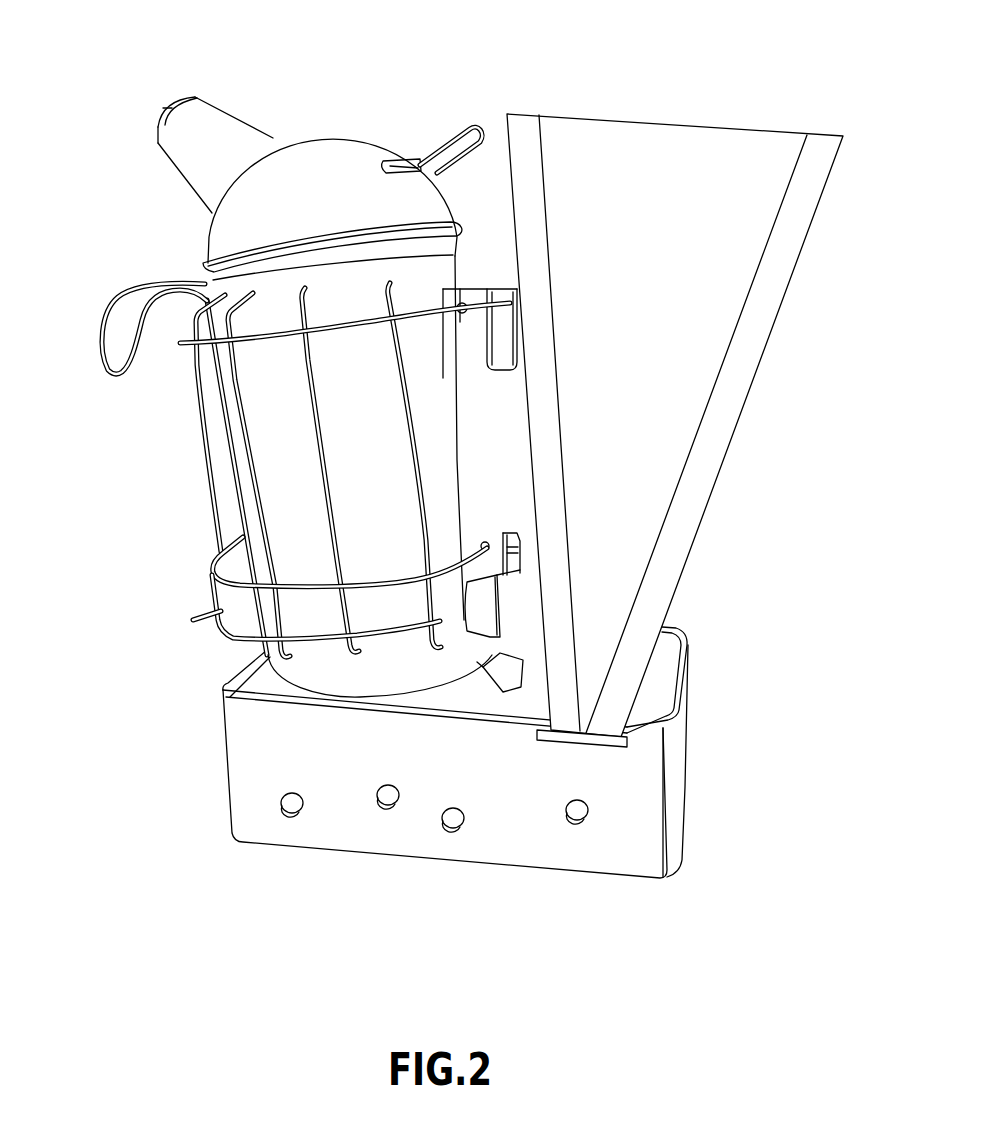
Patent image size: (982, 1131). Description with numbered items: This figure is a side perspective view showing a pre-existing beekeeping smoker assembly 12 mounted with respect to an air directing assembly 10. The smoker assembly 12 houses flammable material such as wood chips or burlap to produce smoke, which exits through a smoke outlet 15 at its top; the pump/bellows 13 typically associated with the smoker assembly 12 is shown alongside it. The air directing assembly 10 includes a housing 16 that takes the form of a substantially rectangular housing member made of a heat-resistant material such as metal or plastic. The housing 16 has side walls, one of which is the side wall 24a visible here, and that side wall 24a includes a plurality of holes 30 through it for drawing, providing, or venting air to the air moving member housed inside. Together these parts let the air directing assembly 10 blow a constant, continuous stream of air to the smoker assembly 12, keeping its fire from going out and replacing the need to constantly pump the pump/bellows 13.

The air directing assembly 10 is at (113, 720).
The smoker assembly 12 is at (530, 50).
The pump/bellows 13 is at (752, 158).
The smoke outlet 15 is at (165, 108).
The housing 16 is at (673, 755).
The side wall 24a is at (630, 808).
The holes 30 is at (447, 833).